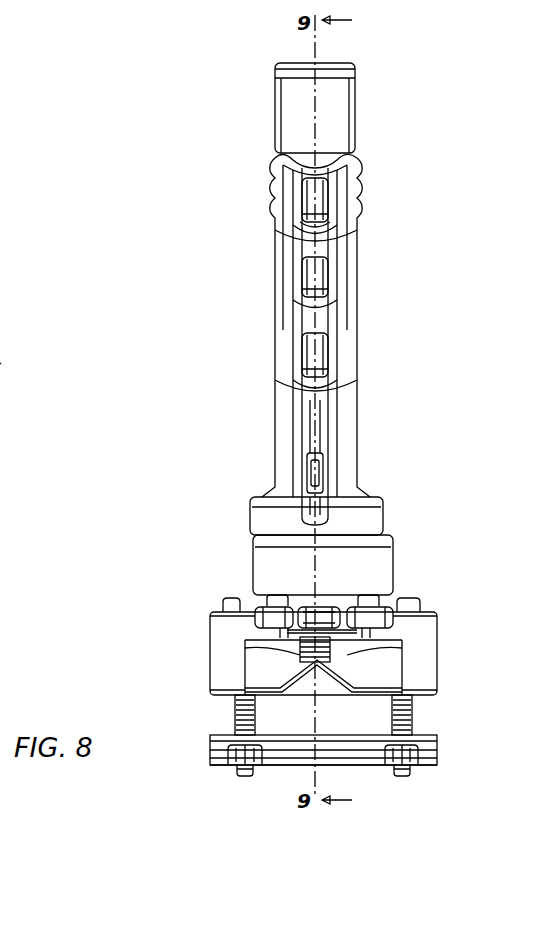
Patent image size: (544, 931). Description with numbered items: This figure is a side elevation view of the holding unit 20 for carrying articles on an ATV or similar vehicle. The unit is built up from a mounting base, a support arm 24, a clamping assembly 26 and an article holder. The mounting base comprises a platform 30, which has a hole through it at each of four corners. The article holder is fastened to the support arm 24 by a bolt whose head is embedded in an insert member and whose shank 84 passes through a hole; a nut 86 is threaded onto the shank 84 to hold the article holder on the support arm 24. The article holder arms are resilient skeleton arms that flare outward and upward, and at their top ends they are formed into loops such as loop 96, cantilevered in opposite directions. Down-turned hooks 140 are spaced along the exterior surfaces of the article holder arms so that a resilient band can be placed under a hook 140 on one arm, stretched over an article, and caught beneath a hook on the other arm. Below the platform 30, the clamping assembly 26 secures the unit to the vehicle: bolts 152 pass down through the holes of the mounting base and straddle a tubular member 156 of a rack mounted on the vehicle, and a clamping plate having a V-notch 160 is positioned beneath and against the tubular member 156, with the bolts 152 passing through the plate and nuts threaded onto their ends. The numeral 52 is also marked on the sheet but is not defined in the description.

The holding unit 20 is at (228, 170).
The loop 96 is at (345, 97).
The down-turned hooks 140 is at (337, 362).
The support arm 24 is at (255, 565).
The nut 86 is at (262, 617).
The shank 84 is at (300, 650).
The platform 30 is at (245, 678).
The bolts 152 is at (235, 713).
The tubular member 156 is at (230, 757).
The V-notch 160 is at (352, 766).
The clamping assembly 26 is at (440, 775).
The member 52 is at (0, 363).